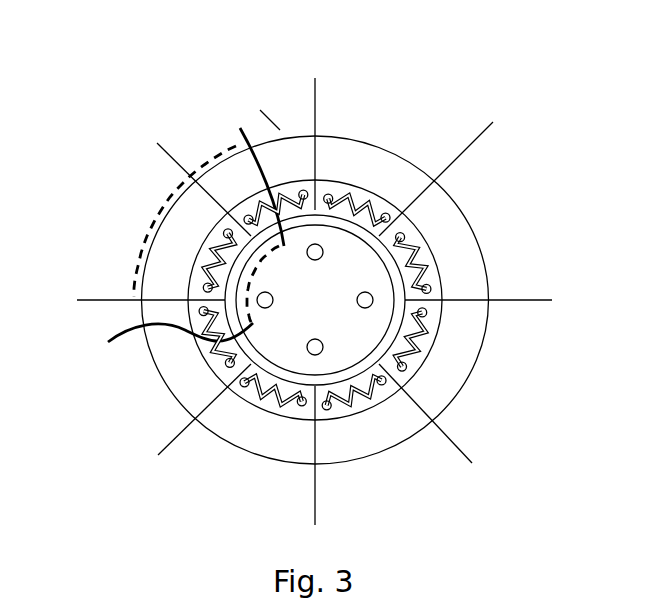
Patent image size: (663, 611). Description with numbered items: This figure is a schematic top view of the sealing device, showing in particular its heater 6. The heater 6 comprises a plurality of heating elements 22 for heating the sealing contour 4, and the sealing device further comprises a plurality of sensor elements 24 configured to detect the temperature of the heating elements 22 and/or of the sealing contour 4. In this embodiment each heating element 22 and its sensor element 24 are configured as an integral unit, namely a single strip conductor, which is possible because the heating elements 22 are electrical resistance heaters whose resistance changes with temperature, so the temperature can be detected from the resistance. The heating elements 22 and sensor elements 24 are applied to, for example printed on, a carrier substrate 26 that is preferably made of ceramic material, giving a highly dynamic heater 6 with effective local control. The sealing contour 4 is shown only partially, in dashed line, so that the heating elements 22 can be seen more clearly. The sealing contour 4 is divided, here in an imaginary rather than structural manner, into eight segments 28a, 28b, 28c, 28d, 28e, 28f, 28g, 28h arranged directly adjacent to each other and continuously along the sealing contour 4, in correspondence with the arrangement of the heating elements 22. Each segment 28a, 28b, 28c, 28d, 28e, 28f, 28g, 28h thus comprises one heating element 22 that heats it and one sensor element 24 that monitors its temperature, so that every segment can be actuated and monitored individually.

The sealing contour 4 is at (160, 203).
The heater 6 is at (370, 300).
The heating element 22 is at (380, 205).
The sensor element 24 is at (422, 258).
The carrier substrate 26 is at (323, 212).
The segment 28a is at (381, 144).
The segment 28b is at (479, 211).
The segment 28c is at (468, 413).
The segment 28d is at (389, 475).
The segment 28e is at (204, 460).
The segment 28f is at (148, 378).
The segment 28g is at (141, 203).
The segment 28h is at (221, 117).